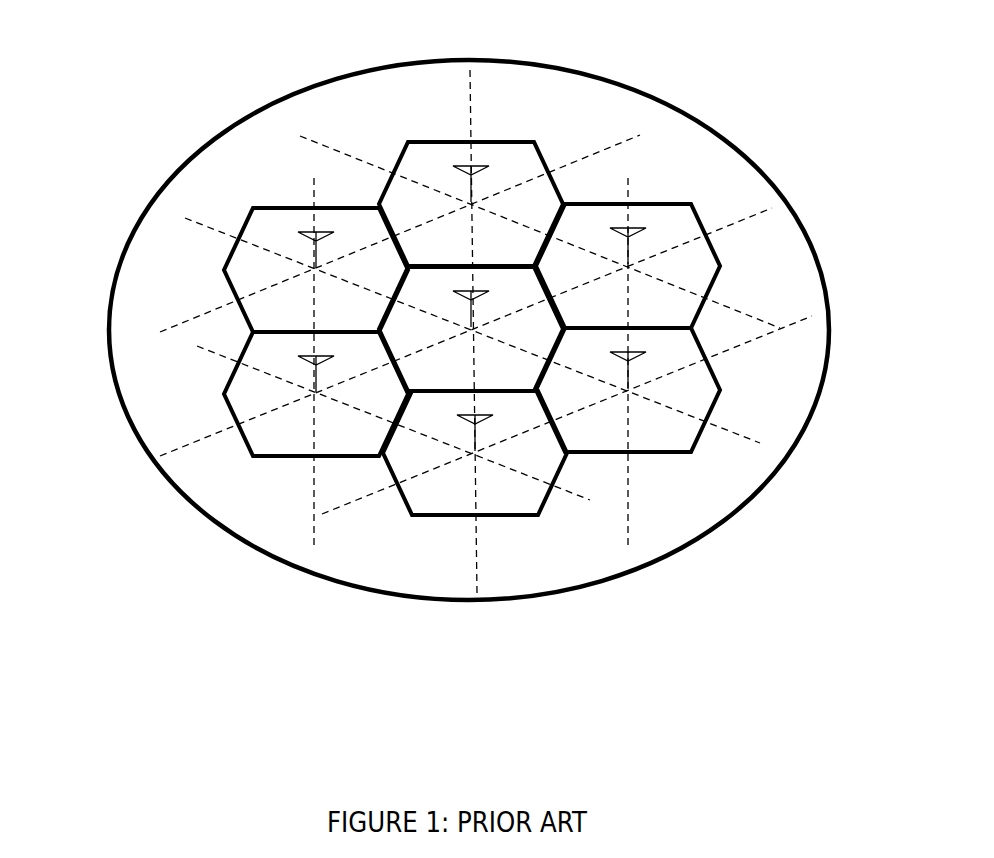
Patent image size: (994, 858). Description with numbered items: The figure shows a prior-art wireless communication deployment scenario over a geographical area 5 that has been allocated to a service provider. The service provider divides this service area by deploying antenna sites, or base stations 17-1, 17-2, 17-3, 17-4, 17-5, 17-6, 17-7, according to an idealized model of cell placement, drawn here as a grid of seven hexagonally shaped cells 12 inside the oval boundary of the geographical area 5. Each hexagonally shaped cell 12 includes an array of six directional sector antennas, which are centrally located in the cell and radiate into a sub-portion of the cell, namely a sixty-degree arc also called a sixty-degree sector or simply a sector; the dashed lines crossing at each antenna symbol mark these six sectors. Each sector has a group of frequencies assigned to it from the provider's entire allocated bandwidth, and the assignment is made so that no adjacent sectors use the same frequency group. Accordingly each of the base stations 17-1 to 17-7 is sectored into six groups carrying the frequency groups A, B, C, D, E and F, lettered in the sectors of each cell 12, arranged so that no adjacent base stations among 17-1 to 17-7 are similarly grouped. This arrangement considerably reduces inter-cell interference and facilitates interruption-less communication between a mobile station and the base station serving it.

The geographical area 5 is at (740, 150).
The hexagonally shaped cell 12 is at (398, 153).
The base station 17-1 is at (479, 290).
The base station 17-2 is at (455, 165).
The base station 17-3 is at (633, 228).
The base station 17-4 is at (646, 350).
The base station 17-5 is at (493, 418).
The base station 17-6 is at (312, 363).
The base station 17-7 is at (312, 232).